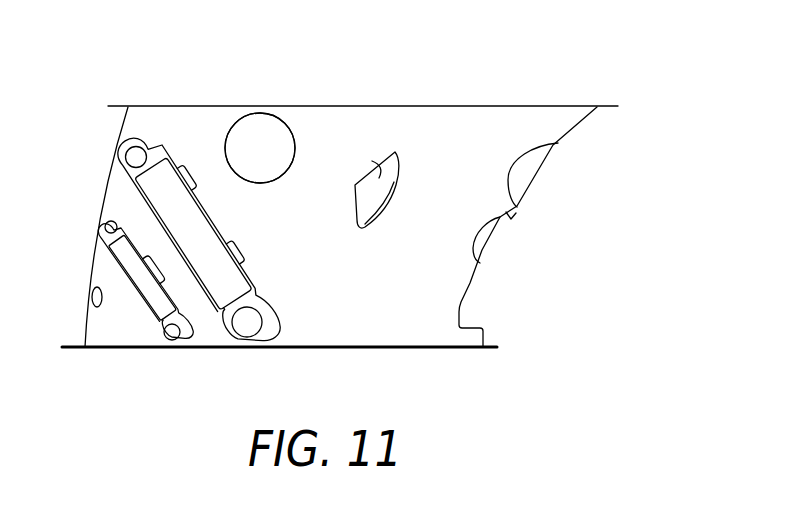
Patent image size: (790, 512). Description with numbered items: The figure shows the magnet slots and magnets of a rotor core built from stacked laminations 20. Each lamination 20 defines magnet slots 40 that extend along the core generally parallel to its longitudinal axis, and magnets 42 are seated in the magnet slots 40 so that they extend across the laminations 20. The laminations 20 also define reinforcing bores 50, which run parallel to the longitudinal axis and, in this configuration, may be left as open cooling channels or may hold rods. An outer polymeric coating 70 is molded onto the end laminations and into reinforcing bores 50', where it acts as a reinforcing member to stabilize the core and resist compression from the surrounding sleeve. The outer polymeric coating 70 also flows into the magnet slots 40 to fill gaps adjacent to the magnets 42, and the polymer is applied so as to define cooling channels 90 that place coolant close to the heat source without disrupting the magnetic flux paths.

The laminations 20 is at (457, 115).
The magnet slots 40 is at (158, 143).
The magnets 42 is at (142, 196).
The reinforcing bores 50 is at (370, 149).
The reinforcing bores 50' is at (250, 127).
The outer polymeric coating 70 is at (262, 132).
The cooling channels 90 is at (125, 158).